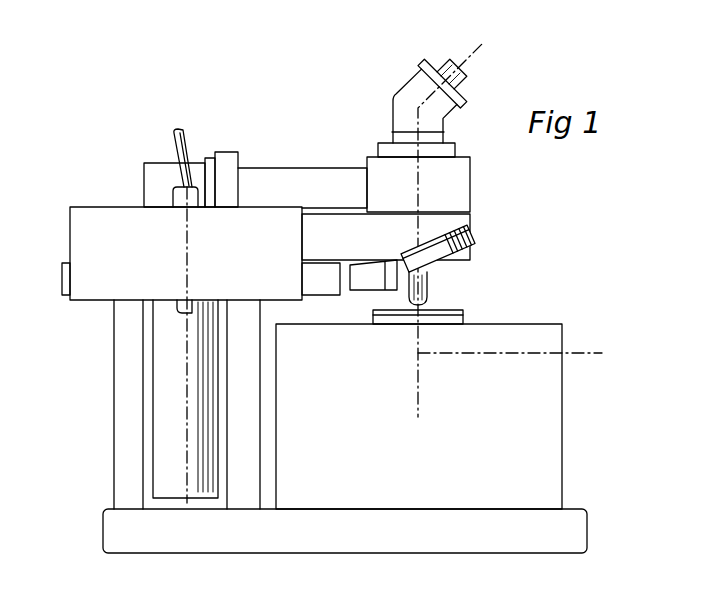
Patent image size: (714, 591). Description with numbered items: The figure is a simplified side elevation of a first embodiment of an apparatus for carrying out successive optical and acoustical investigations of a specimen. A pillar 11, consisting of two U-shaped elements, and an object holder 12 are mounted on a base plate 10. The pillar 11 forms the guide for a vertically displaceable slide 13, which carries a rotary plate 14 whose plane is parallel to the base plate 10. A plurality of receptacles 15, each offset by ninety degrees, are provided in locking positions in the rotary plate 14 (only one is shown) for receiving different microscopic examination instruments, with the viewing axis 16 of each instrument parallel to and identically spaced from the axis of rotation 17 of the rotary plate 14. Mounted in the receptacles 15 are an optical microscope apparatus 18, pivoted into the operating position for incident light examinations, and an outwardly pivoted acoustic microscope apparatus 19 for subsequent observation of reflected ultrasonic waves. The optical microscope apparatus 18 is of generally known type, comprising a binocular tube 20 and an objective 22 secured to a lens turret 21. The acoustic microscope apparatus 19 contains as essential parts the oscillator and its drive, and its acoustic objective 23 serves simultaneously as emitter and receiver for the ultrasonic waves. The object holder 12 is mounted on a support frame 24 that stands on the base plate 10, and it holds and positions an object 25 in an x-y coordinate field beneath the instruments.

The base plate 10 is at (537, 531).
The pillar 11 is at (134, 404).
The object holder 12 is at (452, 308).
The slide 13 is at (174, 444).
The rotary plate 14 is at (62, 282).
The receptacle 15 is at (293, 190).
The viewing axis 16 is at (530, 230).
The axis of rotation 17 is at (187, 371).
The optical microscope apparatus 18 is at (447, 179).
The acoustic microscope apparatus 19 is at (122, 243).
The binocular tube 20 is at (447, 67).
The lens turret 21 is at (475, 243).
The objective 22 is at (432, 288).
The acoustic objective 23 is at (178, 314).
The support frame 24 is at (522, 412).
The object 25 is at (428, 303).